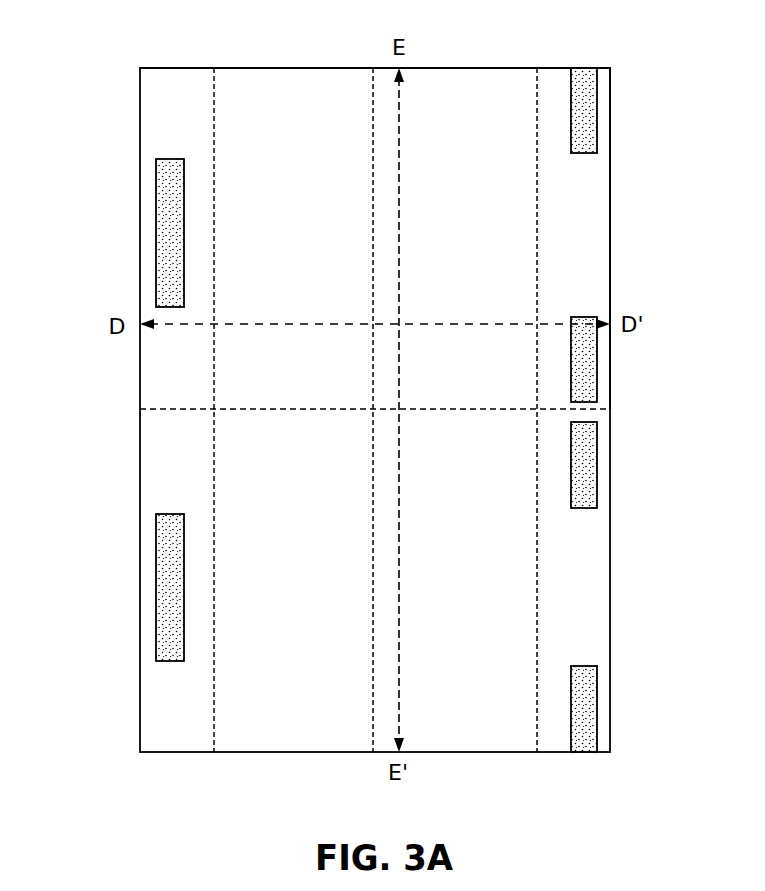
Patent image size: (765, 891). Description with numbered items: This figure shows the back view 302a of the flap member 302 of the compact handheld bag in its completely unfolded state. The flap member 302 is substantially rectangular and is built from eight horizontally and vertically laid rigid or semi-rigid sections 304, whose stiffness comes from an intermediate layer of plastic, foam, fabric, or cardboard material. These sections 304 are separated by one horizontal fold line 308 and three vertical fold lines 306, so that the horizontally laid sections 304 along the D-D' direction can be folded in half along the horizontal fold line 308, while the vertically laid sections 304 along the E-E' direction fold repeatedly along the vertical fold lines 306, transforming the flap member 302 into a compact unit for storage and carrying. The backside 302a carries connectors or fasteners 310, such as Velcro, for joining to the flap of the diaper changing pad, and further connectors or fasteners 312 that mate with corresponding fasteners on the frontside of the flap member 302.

The flap member 302 is at (609, 262).
The backside of the flap member 302a is at (410, 125).
The rigid or semi-rigid sections 304 is at (266, 291).
The vertical fold lines 306 is at (214, 165).
The horizontal fold line 308 is at (326, 409).
The connectors or fasteners 310 is at (168, 243).
The connectors or fasteners 312 is at (586, 117).